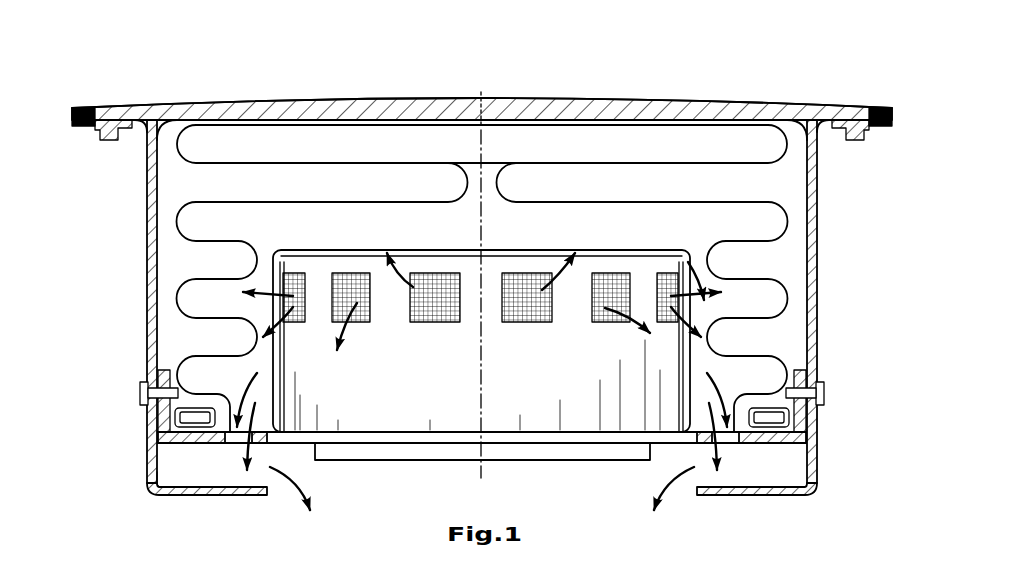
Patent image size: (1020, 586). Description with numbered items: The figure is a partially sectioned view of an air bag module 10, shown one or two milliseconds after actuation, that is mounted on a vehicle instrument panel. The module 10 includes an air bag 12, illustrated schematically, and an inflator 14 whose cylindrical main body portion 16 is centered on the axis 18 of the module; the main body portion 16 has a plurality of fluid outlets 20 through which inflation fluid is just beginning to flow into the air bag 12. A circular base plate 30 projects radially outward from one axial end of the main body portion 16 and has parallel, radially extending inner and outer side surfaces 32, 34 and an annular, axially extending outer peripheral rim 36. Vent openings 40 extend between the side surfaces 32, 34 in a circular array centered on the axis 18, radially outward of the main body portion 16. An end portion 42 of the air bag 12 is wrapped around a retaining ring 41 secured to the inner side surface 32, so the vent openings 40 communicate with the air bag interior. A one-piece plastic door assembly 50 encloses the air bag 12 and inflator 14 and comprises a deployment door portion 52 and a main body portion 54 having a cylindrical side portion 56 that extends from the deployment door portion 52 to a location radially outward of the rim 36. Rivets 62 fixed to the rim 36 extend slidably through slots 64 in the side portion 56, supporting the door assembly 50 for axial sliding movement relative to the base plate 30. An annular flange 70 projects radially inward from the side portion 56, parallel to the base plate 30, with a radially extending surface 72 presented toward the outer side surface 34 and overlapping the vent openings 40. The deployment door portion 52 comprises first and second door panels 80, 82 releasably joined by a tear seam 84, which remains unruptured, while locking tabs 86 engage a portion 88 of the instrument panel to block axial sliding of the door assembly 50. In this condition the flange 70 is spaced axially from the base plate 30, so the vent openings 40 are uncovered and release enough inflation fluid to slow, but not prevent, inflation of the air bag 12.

The air bag module 10 is at (481, 284).
The air bag 12 is at (182, 203).
The inflator 14 is at (481, 320).
The main body portion 16 is at (420, 248).
The axis 18 is at (481, 478).
The fluid outlets 20 is at (513, 300).
The base plate 30 is at (481, 488).
The inner side surface 32 is at (385, 430).
The outer side surface 34 is at (378, 444).
The outer peripheral rim 36 is at (160, 378).
The vent openings 40 is at (232, 462).
The retaining ring 41 is at (186, 420).
The end portion 42 is at (185, 440).
The door assembly 50 is at (474, 115).
The deployment door portion 52 is at (482, 74).
The main body portion 54 is at (822, 303).
The side portion 56 is at (152, 247).
The rivets 62 is at (140, 393).
The slots 64 is at (815, 420).
The annular flange 70 is at (195, 497).
The radially extending surface 72 is at (162, 490).
The first door panel 80 is at (482, 80).
The second door panel 82 is at (572, 98).
The tear seam 84 is at (501, 98).
The locking tabs 86 is at (115, 140).
The instrument panel portion 88 is at (80, 108).